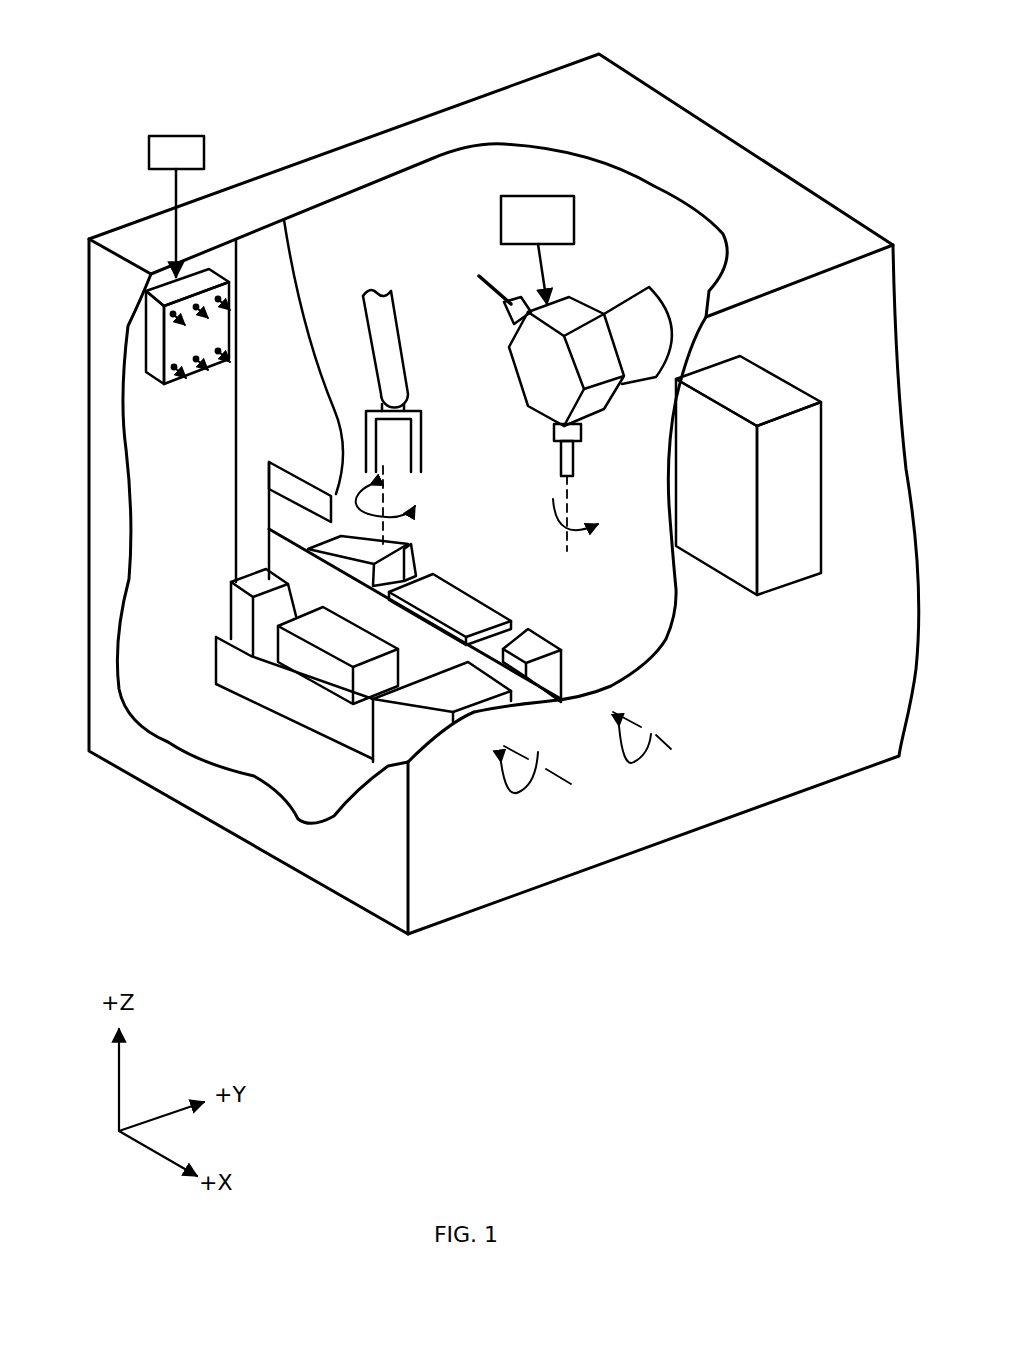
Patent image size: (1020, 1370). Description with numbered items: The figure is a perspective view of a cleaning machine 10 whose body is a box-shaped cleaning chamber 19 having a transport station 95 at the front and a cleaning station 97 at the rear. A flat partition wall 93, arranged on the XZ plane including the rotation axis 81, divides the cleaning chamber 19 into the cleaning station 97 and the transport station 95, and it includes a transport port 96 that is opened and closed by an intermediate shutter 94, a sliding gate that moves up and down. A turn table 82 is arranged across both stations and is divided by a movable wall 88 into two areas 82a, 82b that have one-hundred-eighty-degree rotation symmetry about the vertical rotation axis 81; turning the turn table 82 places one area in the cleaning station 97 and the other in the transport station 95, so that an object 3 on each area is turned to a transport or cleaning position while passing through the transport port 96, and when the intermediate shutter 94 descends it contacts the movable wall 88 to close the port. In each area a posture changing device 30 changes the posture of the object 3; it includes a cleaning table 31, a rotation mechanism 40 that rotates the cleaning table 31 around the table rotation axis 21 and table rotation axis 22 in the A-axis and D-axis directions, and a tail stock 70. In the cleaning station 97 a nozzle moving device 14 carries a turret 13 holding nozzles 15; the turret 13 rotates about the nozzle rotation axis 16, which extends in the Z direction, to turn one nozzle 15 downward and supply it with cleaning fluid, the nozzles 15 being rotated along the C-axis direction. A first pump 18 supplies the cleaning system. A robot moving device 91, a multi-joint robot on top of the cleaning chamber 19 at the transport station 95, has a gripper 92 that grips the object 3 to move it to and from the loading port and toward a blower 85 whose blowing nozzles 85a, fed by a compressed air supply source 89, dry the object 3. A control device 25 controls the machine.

The cleaning machine 10 is at (854, 13).
The turret 13 is at (508, 338).
The nozzle moving device 14 is at (663, 307).
The nozzles 15 is at (487, 280).
The nozzle rotation axis 16 is at (568, 495).
The first pump 18 is at (500, 215).
The cleaning chamber 19 is at (825, 211).
The table rotation axis 21 is at (653, 743).
The table rotation axis 22 is at (552, 773).
The control device 25 is at (780, 374).
The posture changing device 30 is at (545, 624).
The cleaning table 31 is at (390, 753).
The rotation mechanism 40 is at (373, 767).
The tail stock 70 is at (243, 643).
The rotation axis 81 is at (388, 505).
The turn table 82 is at (328, 570).
The area 82a is at (233, 660).
The area 82b is at (420, 568).
The blower 85 is at (165, 314).
The blowing nozzles 85a is at (170, 322).
The movable wall 88 is at (273, 547).
The compressed air supply source 89 is at (148, 150).
The robot moving device 91 is at (403, 360).
The gripper 92 is at (365, 427).
The partition wall 93 is at (288, 268).
The intermediate shutter 94 is at (267, 507).
The transport station 95 is at (190, 468).
The transport port 96 is at (303, 497).
The cleaning station 97 is at (372, 210).
The object 3 is at (310, 675).